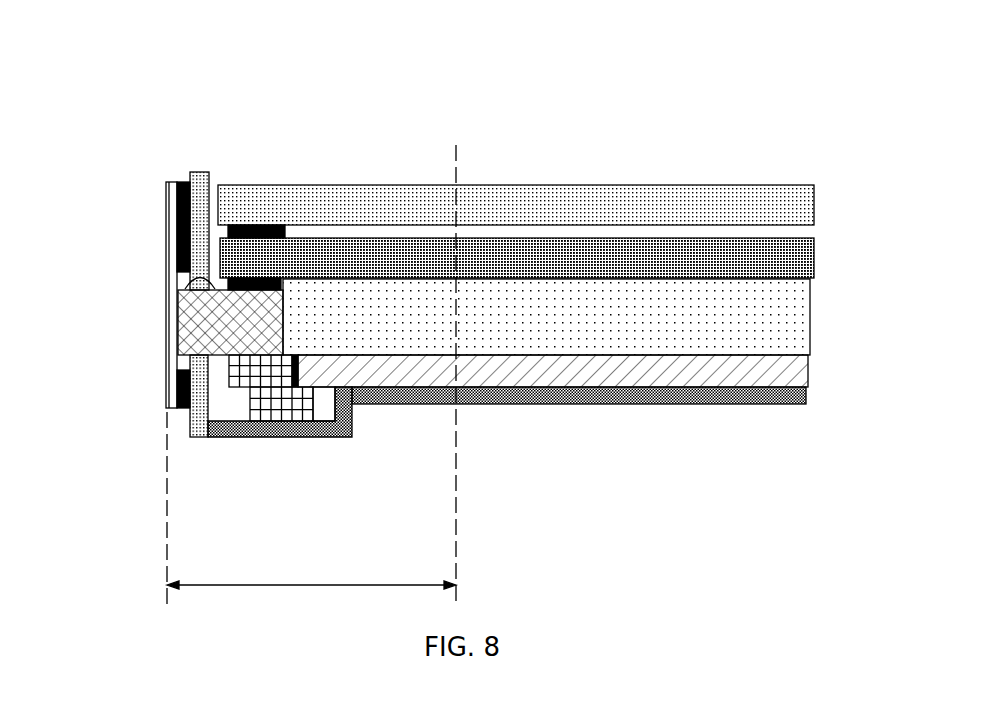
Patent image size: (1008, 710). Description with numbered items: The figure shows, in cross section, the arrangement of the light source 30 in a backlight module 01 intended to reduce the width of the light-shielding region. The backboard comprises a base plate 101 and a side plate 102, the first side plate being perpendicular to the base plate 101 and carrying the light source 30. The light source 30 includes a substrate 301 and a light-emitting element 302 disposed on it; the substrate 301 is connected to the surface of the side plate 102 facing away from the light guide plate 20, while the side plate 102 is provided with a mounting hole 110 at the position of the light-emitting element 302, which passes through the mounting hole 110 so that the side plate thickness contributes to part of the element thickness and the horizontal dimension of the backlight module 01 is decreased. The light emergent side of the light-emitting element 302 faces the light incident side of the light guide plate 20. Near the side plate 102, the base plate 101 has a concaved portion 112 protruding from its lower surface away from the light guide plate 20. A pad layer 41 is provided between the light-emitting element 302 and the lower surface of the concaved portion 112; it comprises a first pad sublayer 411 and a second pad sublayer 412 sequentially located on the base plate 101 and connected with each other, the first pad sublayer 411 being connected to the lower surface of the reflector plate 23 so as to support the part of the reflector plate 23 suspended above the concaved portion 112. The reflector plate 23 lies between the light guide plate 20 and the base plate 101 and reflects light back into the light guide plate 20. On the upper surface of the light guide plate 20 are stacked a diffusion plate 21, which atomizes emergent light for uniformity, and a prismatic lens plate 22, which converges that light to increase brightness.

The backlight module 01 is at (149, 59).
The prismatic lens plate 22 is at (790, 195).
The diffusion plate 21 is at (790, 248).
The light guide plate 20 is at (787, 327).
The reflector plate 23 is at (790, 368).
The base plate 101 is at (590, 395).
The side plate 102 is at (198, 430).
The concaved portion 112 is at (325, 413).
The pad layer 41 is at (275, 440).
The first pad sublayer 411 is at (300, 400).
The second pad sublayer 412 is at (270, 375).
The light source 30 is at (156, 295).
The substrate 301 is at (173, 208).
The light-emitting element 302 is at (184, 322).
The mounting hole 110 is at (188, 360).